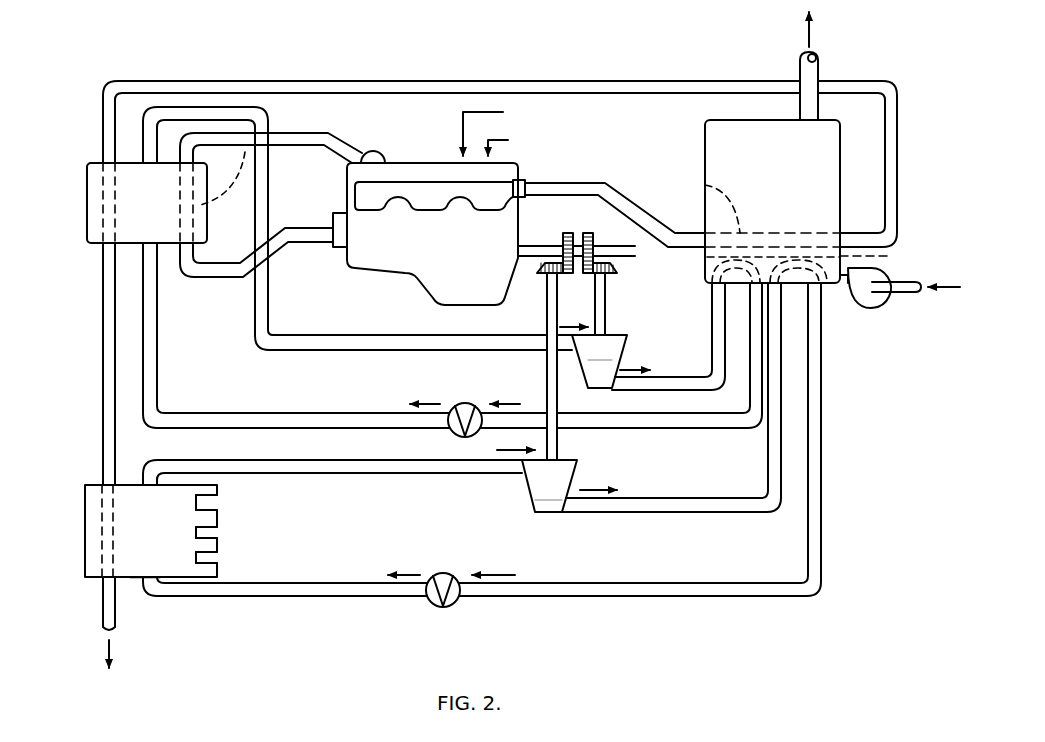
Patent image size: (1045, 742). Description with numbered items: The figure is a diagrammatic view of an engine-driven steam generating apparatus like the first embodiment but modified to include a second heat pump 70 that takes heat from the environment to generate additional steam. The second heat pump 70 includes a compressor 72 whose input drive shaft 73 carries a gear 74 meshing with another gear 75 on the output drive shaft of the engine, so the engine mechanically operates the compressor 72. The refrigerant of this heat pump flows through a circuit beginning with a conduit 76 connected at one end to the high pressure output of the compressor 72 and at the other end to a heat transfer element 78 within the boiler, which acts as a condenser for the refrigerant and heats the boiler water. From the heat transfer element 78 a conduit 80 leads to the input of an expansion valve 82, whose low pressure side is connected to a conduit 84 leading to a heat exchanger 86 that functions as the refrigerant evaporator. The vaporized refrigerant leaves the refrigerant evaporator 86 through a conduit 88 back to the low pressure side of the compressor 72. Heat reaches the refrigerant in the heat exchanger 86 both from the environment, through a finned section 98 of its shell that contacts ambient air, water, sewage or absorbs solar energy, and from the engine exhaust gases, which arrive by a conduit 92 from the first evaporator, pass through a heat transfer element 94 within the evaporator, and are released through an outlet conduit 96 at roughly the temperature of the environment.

The second heat pump 70 is at (578, 480).
The compressor 72 is at (540, 495).
The input drive shaft 73 is at (547, 322).
The gear 74 is at (545, 275).
The gear 75 is at (560, 240).
The conduit 76 is at (695, 512).
The heat transfer element 78 is at (882, 255).
The conduit 80 is at (821, 535).
The expansion valve 82 is at (443, 572).
The conduit 84 is at (262, 583).
The heat exchanger 86 is at (131, 584).
The conduit 88 is at (388, 473).
The conduit 92 is at (103, 348).
The heat transfer element 94 is at (87, 507).
The outlet conduit 96 is at (100, 598).
The finned section 98 is at (216, 510).